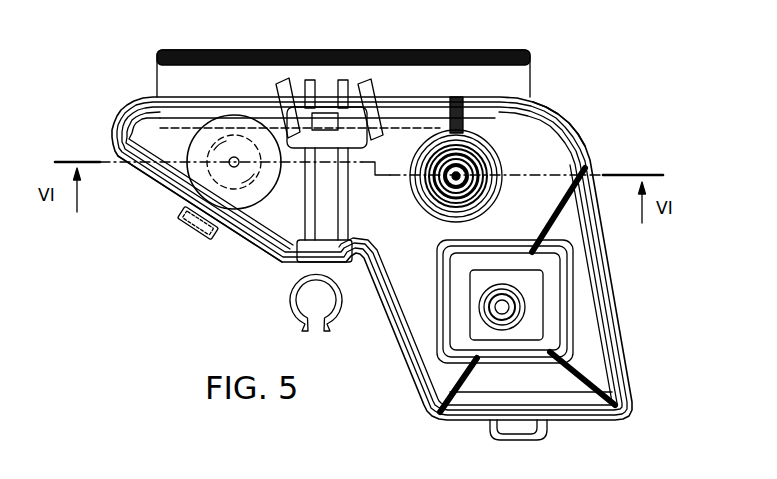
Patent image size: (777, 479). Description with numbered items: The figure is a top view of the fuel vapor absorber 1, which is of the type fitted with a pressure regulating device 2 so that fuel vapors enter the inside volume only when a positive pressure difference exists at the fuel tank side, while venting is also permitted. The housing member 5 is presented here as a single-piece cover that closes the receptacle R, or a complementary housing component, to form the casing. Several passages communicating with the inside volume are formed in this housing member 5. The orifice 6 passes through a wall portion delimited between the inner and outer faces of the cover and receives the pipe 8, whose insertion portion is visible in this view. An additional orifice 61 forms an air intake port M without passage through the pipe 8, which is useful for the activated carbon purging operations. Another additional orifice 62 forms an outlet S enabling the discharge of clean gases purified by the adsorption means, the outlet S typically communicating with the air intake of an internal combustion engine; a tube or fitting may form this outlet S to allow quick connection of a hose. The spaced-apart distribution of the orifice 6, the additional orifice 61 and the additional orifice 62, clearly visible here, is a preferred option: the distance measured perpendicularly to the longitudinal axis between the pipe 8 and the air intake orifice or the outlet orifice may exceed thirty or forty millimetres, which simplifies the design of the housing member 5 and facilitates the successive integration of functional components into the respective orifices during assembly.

The fuel vapor absorber 1 is at (103, 100).
The pressure regulating device 2 is at (547, 108).
The housing member 5 is at (535, 182).
The orifice 6 is at (470, 160).
The pipe 8 is at (478, 168).
The additional orifice 61 is at (203, 232).
The additional orifice 62 is at (510, 300).
The air intake port M is at (183, 186).
The receptacle R is at (270, 274).
The outlet S is at (527, 322).